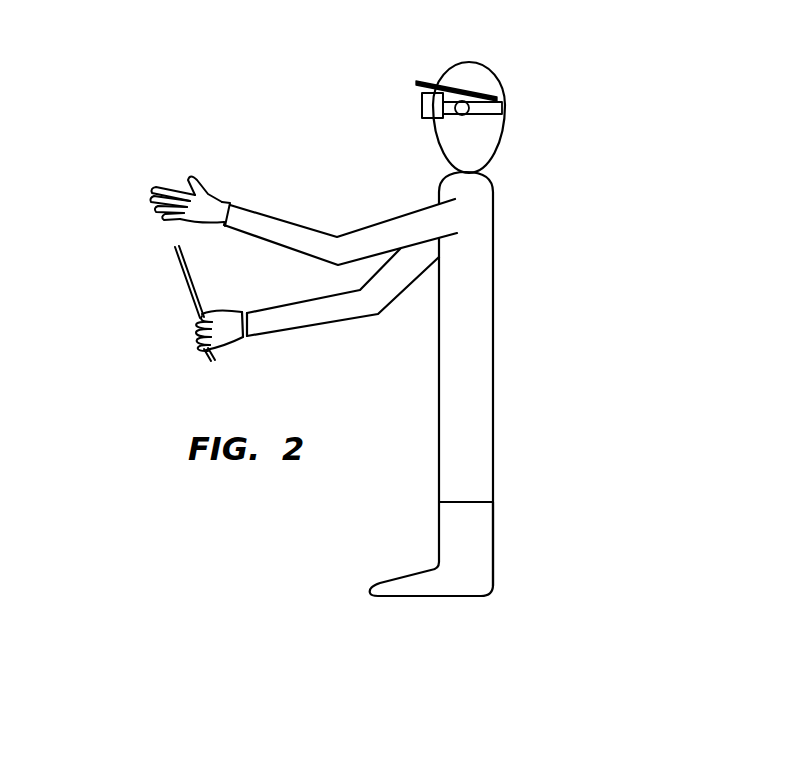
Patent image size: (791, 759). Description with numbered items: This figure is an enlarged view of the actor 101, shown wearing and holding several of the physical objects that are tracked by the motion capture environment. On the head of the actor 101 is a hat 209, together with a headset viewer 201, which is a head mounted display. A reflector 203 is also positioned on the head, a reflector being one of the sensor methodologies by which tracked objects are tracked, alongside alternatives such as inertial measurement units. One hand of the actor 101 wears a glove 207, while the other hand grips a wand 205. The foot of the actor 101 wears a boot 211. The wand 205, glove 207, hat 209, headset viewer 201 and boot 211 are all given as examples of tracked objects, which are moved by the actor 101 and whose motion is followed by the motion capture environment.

The actor 101 is at (485, 352).
The headset viewer 201 is at (422, 112).
The reflector 203 is at (503, 108).
The wand 205 is at (176, 265).
The glove 207 is at (212, 192).
The hat 209 is at (490, 78).
The boot 211 is at (480, 560).